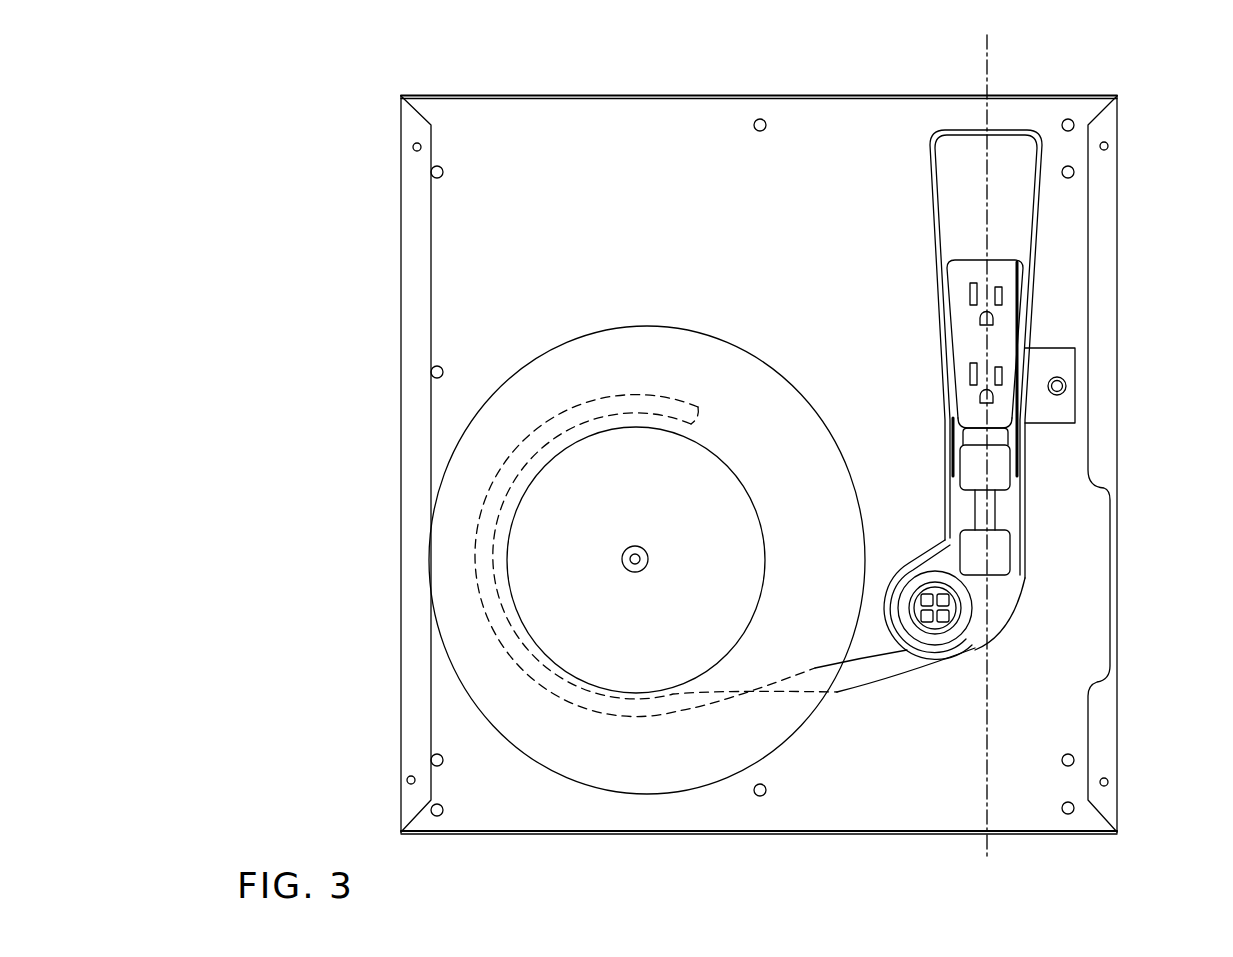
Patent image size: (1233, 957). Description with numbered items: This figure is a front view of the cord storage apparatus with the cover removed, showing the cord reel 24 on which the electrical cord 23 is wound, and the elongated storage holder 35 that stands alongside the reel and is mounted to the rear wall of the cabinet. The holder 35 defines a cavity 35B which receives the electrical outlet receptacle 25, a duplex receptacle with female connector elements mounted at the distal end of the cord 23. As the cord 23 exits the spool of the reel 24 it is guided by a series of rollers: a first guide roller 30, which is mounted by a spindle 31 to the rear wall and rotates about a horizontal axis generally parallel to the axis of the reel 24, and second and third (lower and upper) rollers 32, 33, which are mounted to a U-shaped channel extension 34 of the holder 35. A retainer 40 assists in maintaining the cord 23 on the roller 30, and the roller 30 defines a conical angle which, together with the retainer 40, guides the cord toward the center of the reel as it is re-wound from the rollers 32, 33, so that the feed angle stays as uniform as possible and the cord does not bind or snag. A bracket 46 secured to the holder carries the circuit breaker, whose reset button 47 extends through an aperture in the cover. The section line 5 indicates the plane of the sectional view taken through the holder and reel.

The section line 5- 5 is at (987, 35).
The electrical cord 23 is at (917, 657).
The cord reel 24 is at (610, 323).
The electrical outlet receptacle 25 is at (978, 341).
The first guide roller 30 is at (967, 637).
The spindle 31 is at (945, 622).
The second (lower) roller 32 is at (988, 553).
The third (upper) roller 33 is at (985, 460).
The U-shaped channel extension 34 is at (948, 452).
The storage holder 35 is at (937, 315).
The cavity 35B is at (950, 189).
The retainer 40 is at (920, 637).
The bracket 46 is at (1060, 360).
The reset button 47 is at (1072, 386).